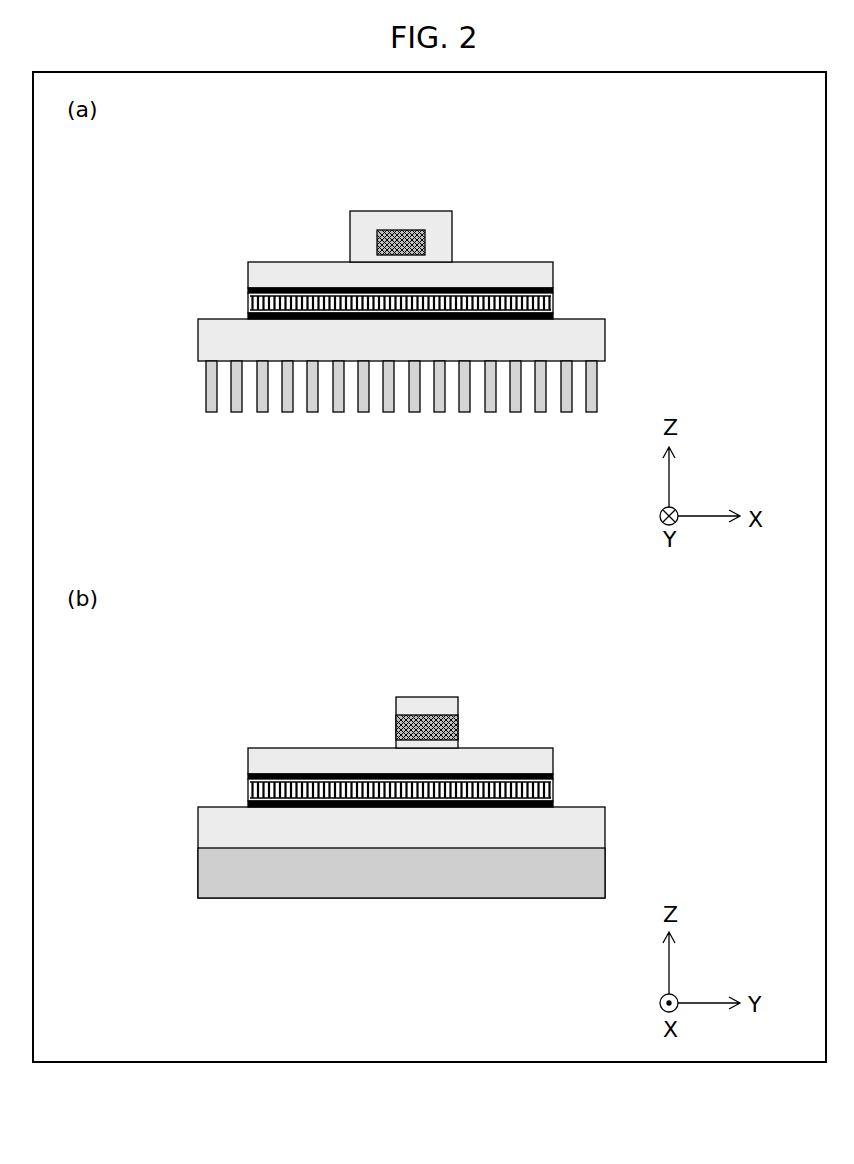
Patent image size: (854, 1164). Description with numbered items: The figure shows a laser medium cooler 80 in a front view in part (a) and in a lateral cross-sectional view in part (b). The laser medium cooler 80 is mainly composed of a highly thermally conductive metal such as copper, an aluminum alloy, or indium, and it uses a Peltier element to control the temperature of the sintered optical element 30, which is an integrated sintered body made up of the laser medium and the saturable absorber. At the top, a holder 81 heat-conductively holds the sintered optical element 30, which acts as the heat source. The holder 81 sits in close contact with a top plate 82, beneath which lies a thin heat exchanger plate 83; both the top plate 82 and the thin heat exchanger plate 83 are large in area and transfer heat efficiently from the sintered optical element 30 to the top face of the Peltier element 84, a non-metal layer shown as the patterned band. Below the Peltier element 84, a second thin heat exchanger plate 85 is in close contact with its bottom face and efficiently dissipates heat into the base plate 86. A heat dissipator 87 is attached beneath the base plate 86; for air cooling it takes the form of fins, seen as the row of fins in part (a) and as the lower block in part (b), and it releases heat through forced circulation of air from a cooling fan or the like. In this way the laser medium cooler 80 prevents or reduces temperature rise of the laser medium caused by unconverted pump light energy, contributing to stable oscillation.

The sintered optical element 30 is at (403, 232).
The laser medium cooler 80 is at (607, 177).
The holder 81 is at (352, 237).
The top plate 82 is at (518, 270).
The thin heat exchanger plate 83 is at (248, 290).
The Peltier element 84 is at (553, 303).
The thin heat exchanger plate 85 is at (553, 318).
The base plate 86 is at (205, 342).
The heat dissipator 87 is at (213, 405).